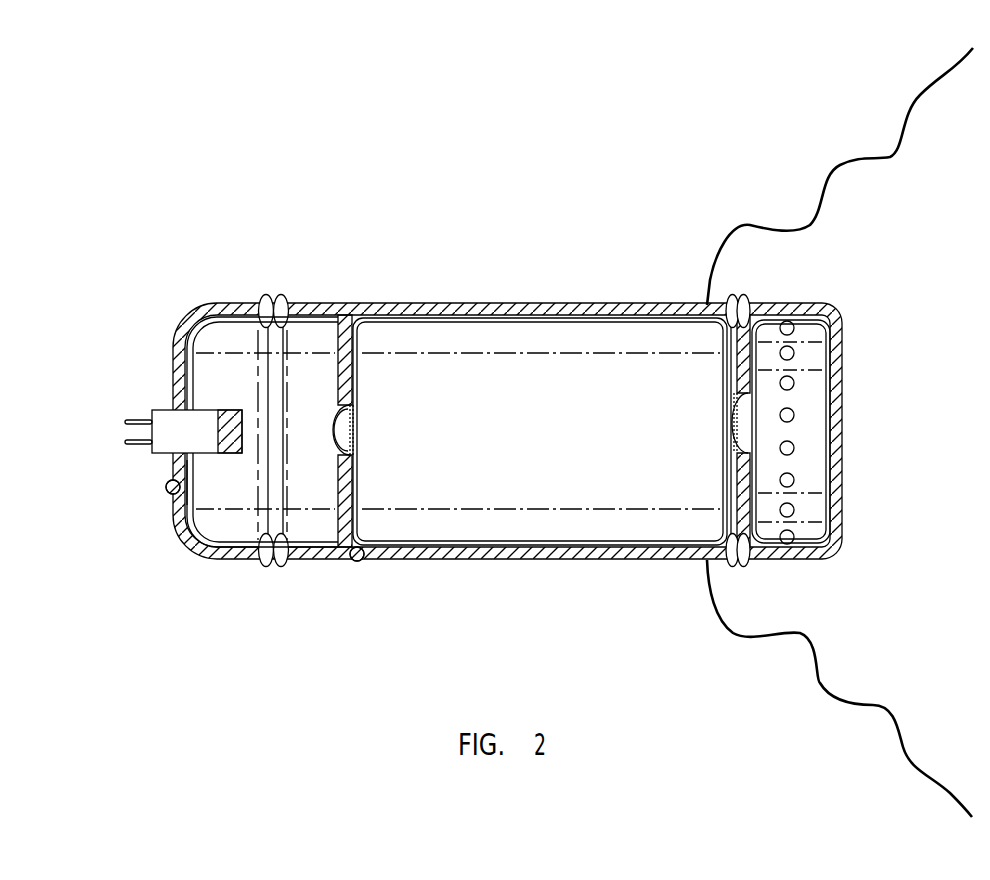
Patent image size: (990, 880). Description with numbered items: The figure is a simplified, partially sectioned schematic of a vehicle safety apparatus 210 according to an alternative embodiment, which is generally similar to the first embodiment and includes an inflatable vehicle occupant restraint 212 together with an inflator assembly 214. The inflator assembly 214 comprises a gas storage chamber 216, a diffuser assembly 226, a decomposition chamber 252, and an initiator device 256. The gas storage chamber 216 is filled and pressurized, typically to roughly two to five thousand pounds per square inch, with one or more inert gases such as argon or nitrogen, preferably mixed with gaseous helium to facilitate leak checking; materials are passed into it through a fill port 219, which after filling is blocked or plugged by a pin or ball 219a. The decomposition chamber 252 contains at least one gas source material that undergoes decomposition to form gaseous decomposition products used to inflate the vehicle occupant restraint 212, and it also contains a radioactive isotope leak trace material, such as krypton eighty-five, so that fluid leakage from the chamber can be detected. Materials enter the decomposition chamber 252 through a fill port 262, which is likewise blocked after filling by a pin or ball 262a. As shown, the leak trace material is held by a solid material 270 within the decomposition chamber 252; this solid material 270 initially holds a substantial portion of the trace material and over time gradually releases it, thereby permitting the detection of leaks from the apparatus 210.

The vehicle safety apparatus 210 is at (521, 190).
The inflatable vehicle occupant restraint 212 is at (860, 155).
The inflator assembly 214 is at (425, 352).
The gas storage chamber 216 is at (593, 542).
The fill port 219 is at (337, 560).
The pin or ball 219a is at (357, 563).
The diffuser assembly 226 is at (840, 298).
The decomposition chamber 252 is at (200, 513).
The initiator device 256 is at (166, 459).
The fill port 262 is at (178, 508).
The pin or ball 262a is at (166, 488).
The solid material 270 is at (228, 450).